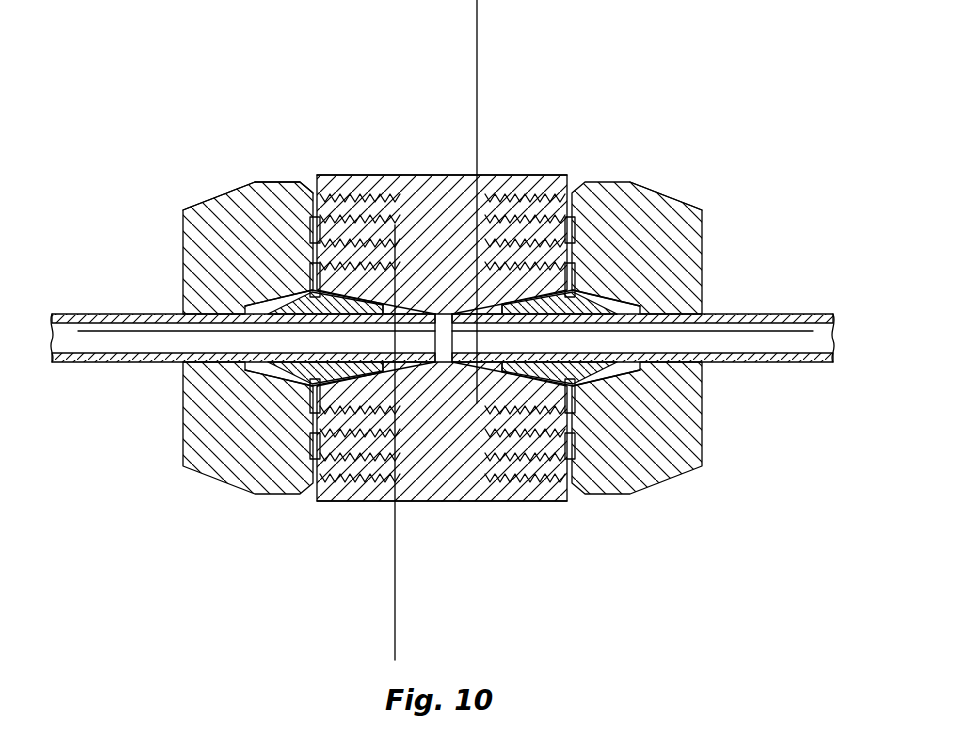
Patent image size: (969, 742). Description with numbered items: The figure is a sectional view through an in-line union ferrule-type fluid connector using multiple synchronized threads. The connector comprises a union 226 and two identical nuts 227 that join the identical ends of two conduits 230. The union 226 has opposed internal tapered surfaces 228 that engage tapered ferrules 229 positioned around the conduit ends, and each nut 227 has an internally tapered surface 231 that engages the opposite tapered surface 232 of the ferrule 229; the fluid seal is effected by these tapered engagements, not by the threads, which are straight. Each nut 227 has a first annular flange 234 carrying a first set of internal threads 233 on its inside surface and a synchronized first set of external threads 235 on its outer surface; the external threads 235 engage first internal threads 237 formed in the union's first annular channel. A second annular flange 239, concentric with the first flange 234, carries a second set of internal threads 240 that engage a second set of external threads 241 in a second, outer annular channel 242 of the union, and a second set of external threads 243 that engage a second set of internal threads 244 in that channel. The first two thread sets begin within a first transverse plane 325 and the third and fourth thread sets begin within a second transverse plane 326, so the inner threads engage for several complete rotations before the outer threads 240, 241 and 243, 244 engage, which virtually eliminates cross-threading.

The union 226 is at (458, 501).
The nut 227 is at (183, 392).
The internal tapered surface 228 is at (440, 300).
The tapered ferrule 229 is at (600, 300).
The conduit 230 is at (90, 314).
The internally tapered surface 231 is at (183, 222).
The tapered surface 232 is at (262, 184).
The first set of internal threads 233 is at (520, 185).
The first annular flange 234 is at (378, 196).
The first set of external threads 235 is at (560, 185).
The first internal threads 237 is at (318, 180).
The second annular flange 239 is at (312, 215).
The second set of internal threads 240 is at (350, 183).
The second set of external threads 241 is at (353, 495).
The second annular channel 242 is at (430, 295).
The second set of external threads 243 is at (535, 175).
The second set of internal threads 244 is at (503, 501).
The first transverse plane 325 is at (477, 33).
The second transverse plane 326 is at (395, 628).